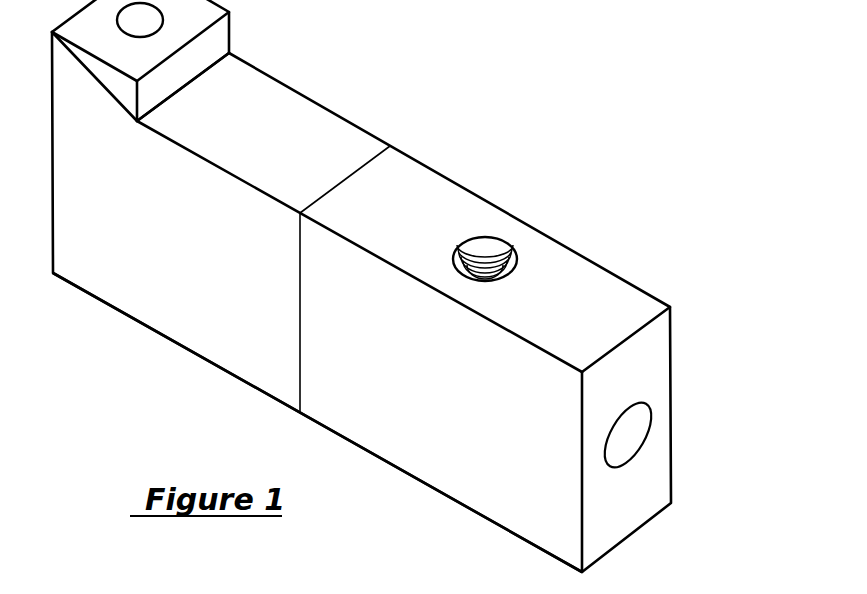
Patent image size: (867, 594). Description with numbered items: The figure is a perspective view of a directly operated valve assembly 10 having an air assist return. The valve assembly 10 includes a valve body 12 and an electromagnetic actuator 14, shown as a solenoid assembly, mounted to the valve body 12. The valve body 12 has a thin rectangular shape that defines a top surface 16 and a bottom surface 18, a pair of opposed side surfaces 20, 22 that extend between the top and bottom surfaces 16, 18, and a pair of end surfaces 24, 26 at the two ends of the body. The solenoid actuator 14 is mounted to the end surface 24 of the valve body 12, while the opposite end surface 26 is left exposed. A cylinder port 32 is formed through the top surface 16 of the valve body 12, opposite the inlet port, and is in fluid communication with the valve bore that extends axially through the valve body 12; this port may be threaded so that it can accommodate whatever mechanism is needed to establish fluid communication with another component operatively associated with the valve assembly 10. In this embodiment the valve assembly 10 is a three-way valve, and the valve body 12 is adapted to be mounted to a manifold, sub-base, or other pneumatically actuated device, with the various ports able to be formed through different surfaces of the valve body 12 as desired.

The directly operated valve assembly 10 is at (484, 88).
The valve body 12 is at (494, 170).
The electromagnetic actuator 14 is at (302, 67).
The top surface 16 is at (640, 305).
The bottom surface 18 is at (398, 470).
The side surface 20 is at (673, 387).
The side surface 22 is at (322, 402).
The end surface 24 is at (357, 168).
The end surface 26 is at (657, 478).
The cylinder port 32 is at (517, 248).